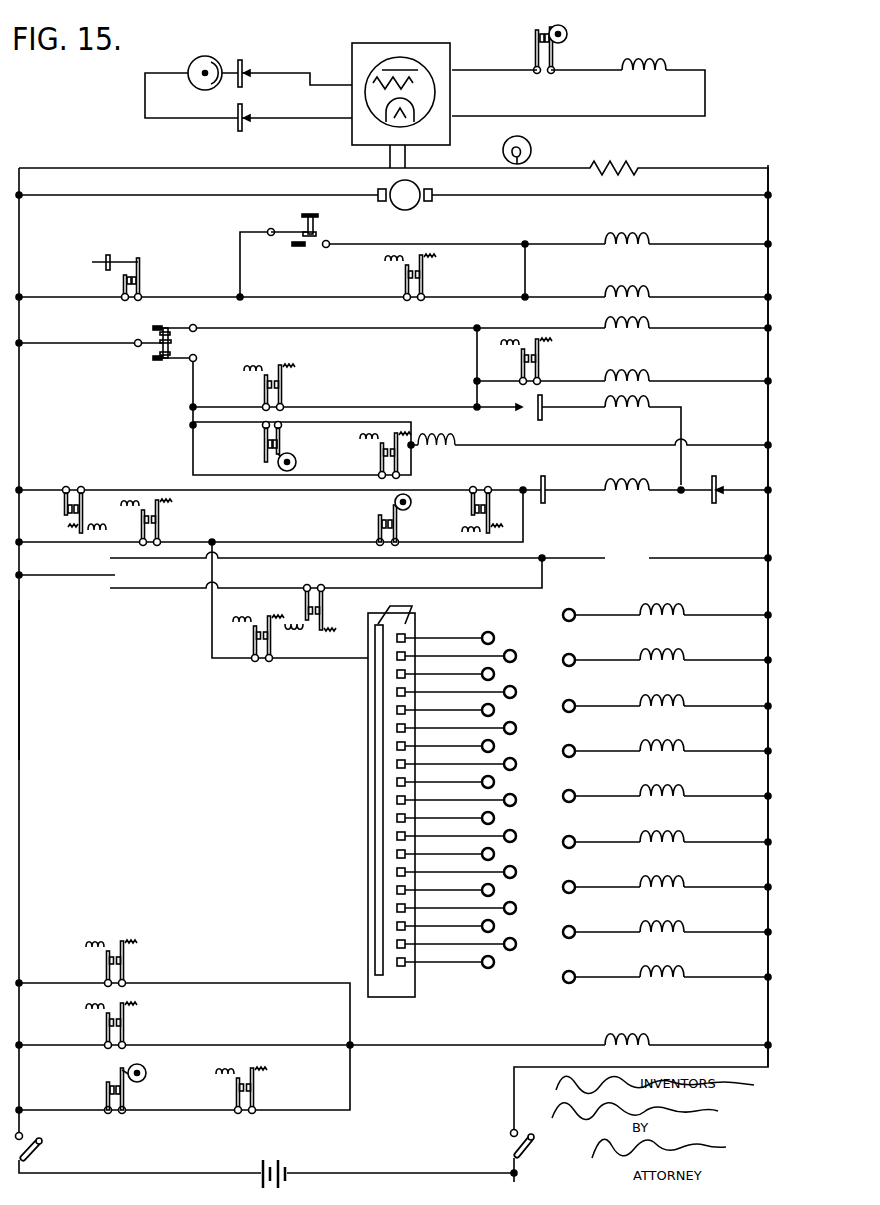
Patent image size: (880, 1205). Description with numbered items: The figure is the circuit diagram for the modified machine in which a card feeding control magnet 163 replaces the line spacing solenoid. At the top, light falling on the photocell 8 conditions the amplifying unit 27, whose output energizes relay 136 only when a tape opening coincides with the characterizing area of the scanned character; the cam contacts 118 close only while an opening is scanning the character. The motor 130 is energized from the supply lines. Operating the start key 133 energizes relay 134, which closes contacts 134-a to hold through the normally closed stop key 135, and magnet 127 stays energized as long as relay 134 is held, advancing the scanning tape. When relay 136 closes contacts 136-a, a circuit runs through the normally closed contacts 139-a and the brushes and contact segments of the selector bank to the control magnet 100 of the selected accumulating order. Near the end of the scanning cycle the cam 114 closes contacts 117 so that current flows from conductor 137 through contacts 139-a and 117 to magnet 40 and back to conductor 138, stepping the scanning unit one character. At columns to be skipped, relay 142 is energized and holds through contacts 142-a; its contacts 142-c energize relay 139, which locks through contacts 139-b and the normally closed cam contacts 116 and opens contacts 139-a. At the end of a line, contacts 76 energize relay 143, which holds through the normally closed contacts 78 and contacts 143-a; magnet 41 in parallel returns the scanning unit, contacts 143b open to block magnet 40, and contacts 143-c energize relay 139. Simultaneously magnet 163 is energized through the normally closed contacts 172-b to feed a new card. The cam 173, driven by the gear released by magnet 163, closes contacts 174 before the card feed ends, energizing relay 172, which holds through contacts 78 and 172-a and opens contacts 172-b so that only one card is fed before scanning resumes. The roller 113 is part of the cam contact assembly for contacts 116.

The photocell 8 is at (193, 63).
The amplifying unit 27 is at (352, 48).
The cam contacts 118 is at (540, 51).
The relay 136 is at (632, 77).
The motor 130 is at (418, 185).
The start key 133 is at (302, 218).
The relay 134 is at (630, 232).
The contacts 134-a is at (405, 282).
The stop key 135 is at (120, 272).
The magnet 127 is at (636, 272).
The relay 143 is at (638, 326).
The contacts 76 is at (157, 333).
The contacts 78 is at (180, 362).
The contacts 143-a is at (266, 395).
The contacts 172-b is at (520, 366).
The relay 172 is at (575, 352).
The card feeding control magnet 163 is at (636, 380).
The conductor 138 is at (768, 390).
The contacts 174 is at (262, 440).
The cam 173 is at (298, 460).
The contacts 172-a is at (382, 470).
The magnet 41 is at (612, 410).
The magnet 40 is at (640, 478).
The contacts 143b is at (72, 500).
The relay 139 is at (636, 1034).
The contacts 139-a is at (160, 530).
The contacts 117 is at (378, 539).
The cam 114 is at (409, 514).
The contacts 142-a is at (320, 598).
The contacts 136-a is at (253, 645).
The relay 142 is at (300, 622).
The control magnet 100 is at (668, 606).
The conductor 137 is at (19, 682).
The contacts 143-c is at (105, 970).
The contacts 142-c is at (105, 1030).
The cam contacts 116 is at (108, 1098).
The roller 113 is at (148, 1080).
The contacts 139-b is at (252, 1095).